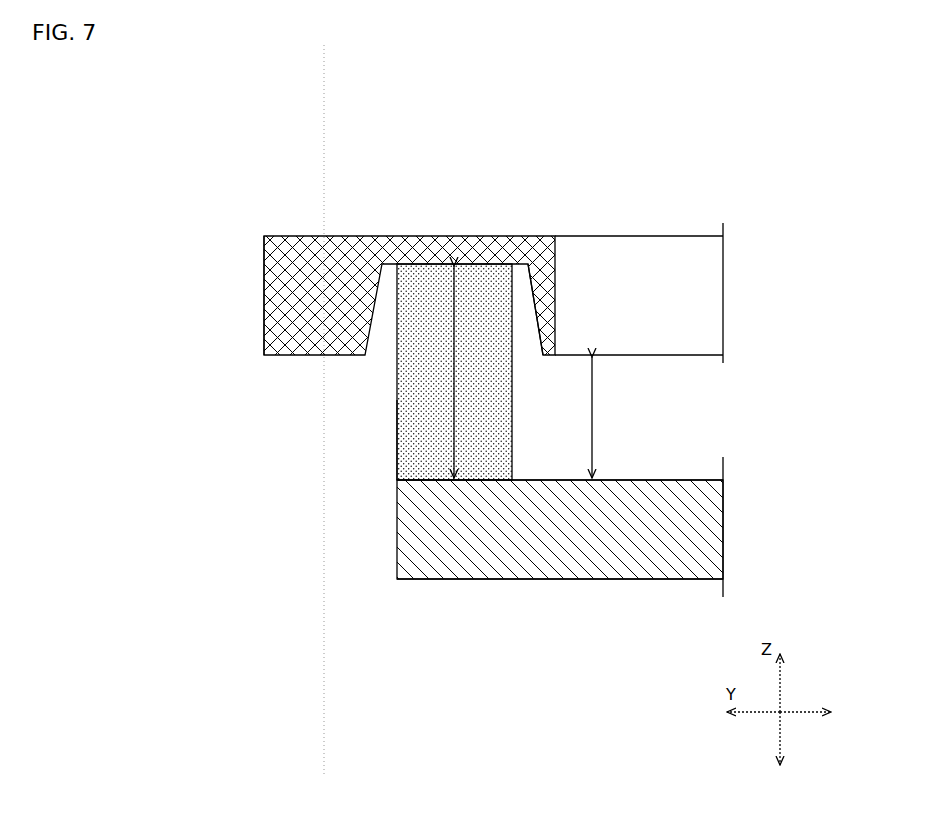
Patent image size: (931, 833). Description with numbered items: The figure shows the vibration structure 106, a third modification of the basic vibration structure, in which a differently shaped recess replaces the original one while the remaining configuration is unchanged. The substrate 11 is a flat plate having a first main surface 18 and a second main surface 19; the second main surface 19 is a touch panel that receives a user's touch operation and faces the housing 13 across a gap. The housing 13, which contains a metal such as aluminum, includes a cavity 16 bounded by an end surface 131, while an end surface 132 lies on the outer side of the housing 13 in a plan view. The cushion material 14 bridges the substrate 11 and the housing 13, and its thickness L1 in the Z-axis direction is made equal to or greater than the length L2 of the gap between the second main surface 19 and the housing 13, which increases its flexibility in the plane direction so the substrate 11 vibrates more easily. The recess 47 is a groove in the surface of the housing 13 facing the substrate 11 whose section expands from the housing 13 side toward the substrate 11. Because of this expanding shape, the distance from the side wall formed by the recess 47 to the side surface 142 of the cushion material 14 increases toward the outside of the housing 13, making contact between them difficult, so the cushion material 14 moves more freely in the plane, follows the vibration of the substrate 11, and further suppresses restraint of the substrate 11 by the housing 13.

The vibration structure 106 is at (272, 210).
The housing 13 is at (307, 236).
The end surface 131 is at (555, 275).
The end surface 132 is at (264, 310).
The cavity 16 is at (657, 270).
The cushion material 14 is at (397, 375).
The side surface 142 is at (397, 425).
The thickness L1 is at (453, 440).
The recess 47 is at (525, 348).
The length L2 is at (592, 410).
The substrate 11 is at (512, 580).
The second main surface 19 is at (690, 479).
The first main surface 18 is at (608, 581).